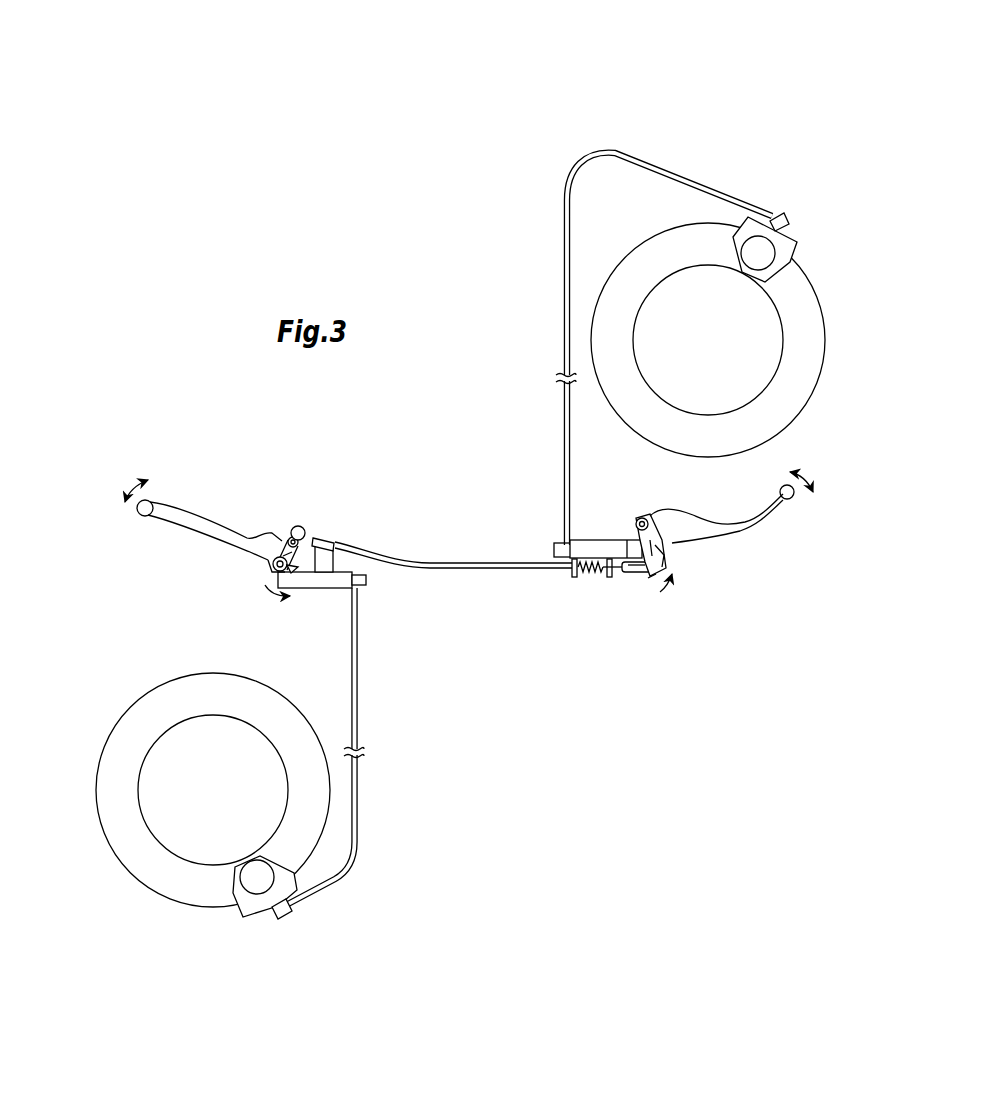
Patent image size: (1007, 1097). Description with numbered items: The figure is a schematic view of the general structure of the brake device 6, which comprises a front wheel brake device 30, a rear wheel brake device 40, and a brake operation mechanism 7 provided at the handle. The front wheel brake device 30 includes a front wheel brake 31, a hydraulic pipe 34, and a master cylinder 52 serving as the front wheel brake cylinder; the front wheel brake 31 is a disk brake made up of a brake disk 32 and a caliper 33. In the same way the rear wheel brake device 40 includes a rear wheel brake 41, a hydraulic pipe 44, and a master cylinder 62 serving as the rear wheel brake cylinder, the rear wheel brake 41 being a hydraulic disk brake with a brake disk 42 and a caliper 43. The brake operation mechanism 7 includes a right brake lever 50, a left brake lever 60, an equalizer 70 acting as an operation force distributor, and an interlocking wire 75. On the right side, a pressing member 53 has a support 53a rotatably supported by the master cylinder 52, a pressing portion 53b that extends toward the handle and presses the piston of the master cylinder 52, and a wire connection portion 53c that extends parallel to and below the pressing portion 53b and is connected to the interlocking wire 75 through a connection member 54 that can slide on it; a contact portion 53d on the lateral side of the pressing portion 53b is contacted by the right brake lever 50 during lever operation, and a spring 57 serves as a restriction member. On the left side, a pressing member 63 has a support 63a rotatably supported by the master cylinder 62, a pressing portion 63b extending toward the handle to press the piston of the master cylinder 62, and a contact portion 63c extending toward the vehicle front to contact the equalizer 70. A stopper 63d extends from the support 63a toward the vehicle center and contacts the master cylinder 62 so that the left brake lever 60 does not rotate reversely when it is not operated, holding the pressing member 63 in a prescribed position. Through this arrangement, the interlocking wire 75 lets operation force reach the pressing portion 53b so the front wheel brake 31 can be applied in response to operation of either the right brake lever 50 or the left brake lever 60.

The brake device 6 is at (750, 128).
The brake operation mechanism 7 is at (665, 677).
The front wheel brake device 30 is at (535, 415).
The front wheel brake 31 is at (721, 283).
The brake disk 32 is at (799, 282).
The caliper 33 is at (782, 240).
The hydraulic pipe 34 is at (565, 455).
The rear wheel brake device 40 is at (420, 717).
The rear wheel brake 41 is at (255, 835).
The brake disk 42 is at (172, 896).
The caliper 43 is at (255, 920).
The hydraulic pipe 44 is at (358, 667).
The right brake lever 50 is at (763, 512).
The master cylinder 52 is at (590, 545).
The pressing member 53 is at (673, 546).
The support 53a is at (642, 518).
The pressing portion 53b is at (674, 552).
The wire connection portion 53c is at (655, 578).
The contact portion 53d is at (664, 514).
The connection member 54 is at (640, 578).
The spring 57 is at (586, 578).
The left brake lever 60 is at (163, 527).
The master cylinder 62 is at (319, 590).
The pressing member 63 is at (256, 565).
The support 63a is at (279, 557).
The pressing portion 63b is at (267, 575).
The contact portion 63c is at (290, 537).
The stopper 63d is at (295, 576).
The equalizer 70 is at (297, 526).
The interlocking wire 75 is at (444, 562).